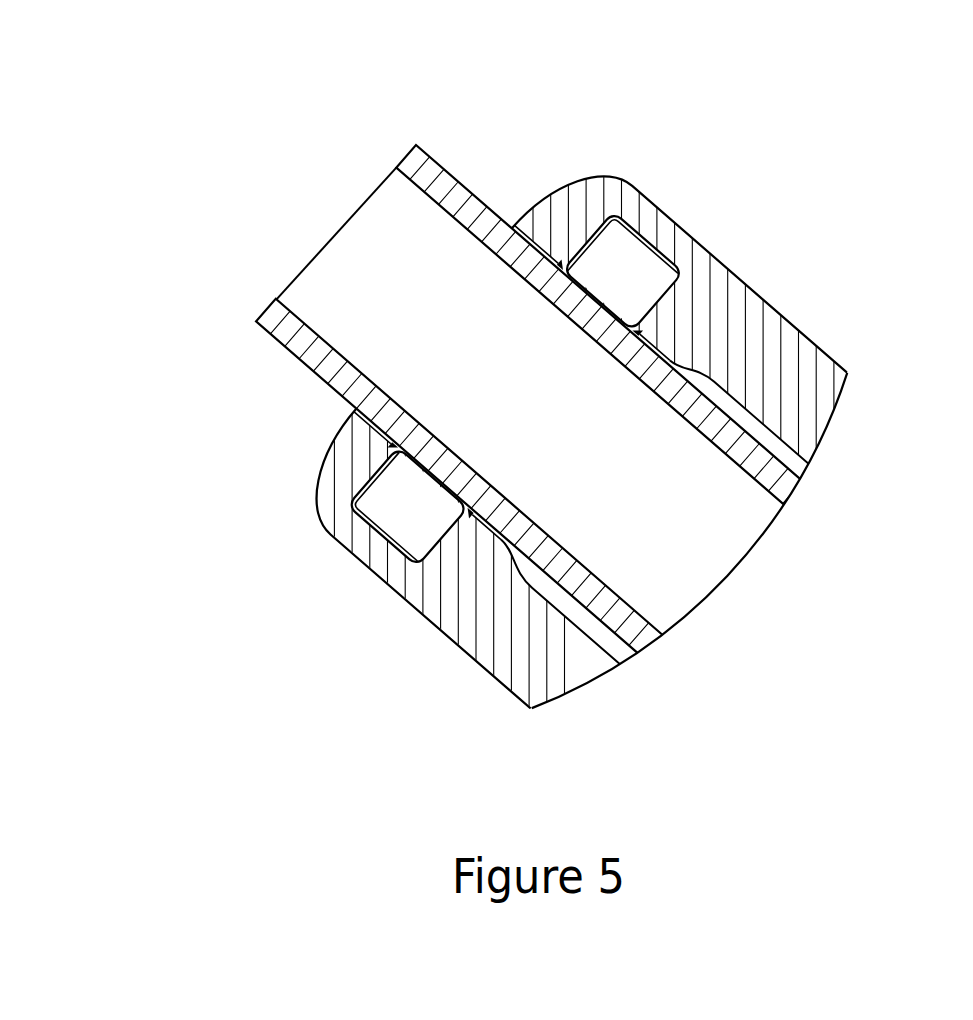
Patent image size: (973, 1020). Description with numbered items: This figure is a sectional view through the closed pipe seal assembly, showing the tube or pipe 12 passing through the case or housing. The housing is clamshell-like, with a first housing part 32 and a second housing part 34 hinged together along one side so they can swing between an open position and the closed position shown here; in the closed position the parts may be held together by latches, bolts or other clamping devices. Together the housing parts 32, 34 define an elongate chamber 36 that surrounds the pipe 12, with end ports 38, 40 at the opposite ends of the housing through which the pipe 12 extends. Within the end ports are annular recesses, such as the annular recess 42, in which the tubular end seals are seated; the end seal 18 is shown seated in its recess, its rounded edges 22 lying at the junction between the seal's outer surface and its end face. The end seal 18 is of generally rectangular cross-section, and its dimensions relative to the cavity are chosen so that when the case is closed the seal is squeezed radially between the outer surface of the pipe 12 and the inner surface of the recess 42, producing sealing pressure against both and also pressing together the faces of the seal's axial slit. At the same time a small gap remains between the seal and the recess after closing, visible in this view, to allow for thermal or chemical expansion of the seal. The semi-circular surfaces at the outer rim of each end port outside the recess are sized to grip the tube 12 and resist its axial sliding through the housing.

The pipe 12 is at (318, 358).
The end seal 18 is at (393, 523).
The rounded edges 22 is at (615, 215).
The first housing part 32 is at (762, 337).
The second housing part 34 is at (513, 630).
The elongate chamber 36 is at (780, 445).
The end port 38 is at (641, 331).
The end port 40 is at (583, 233).
The annular recess 42 is at (653, 237).